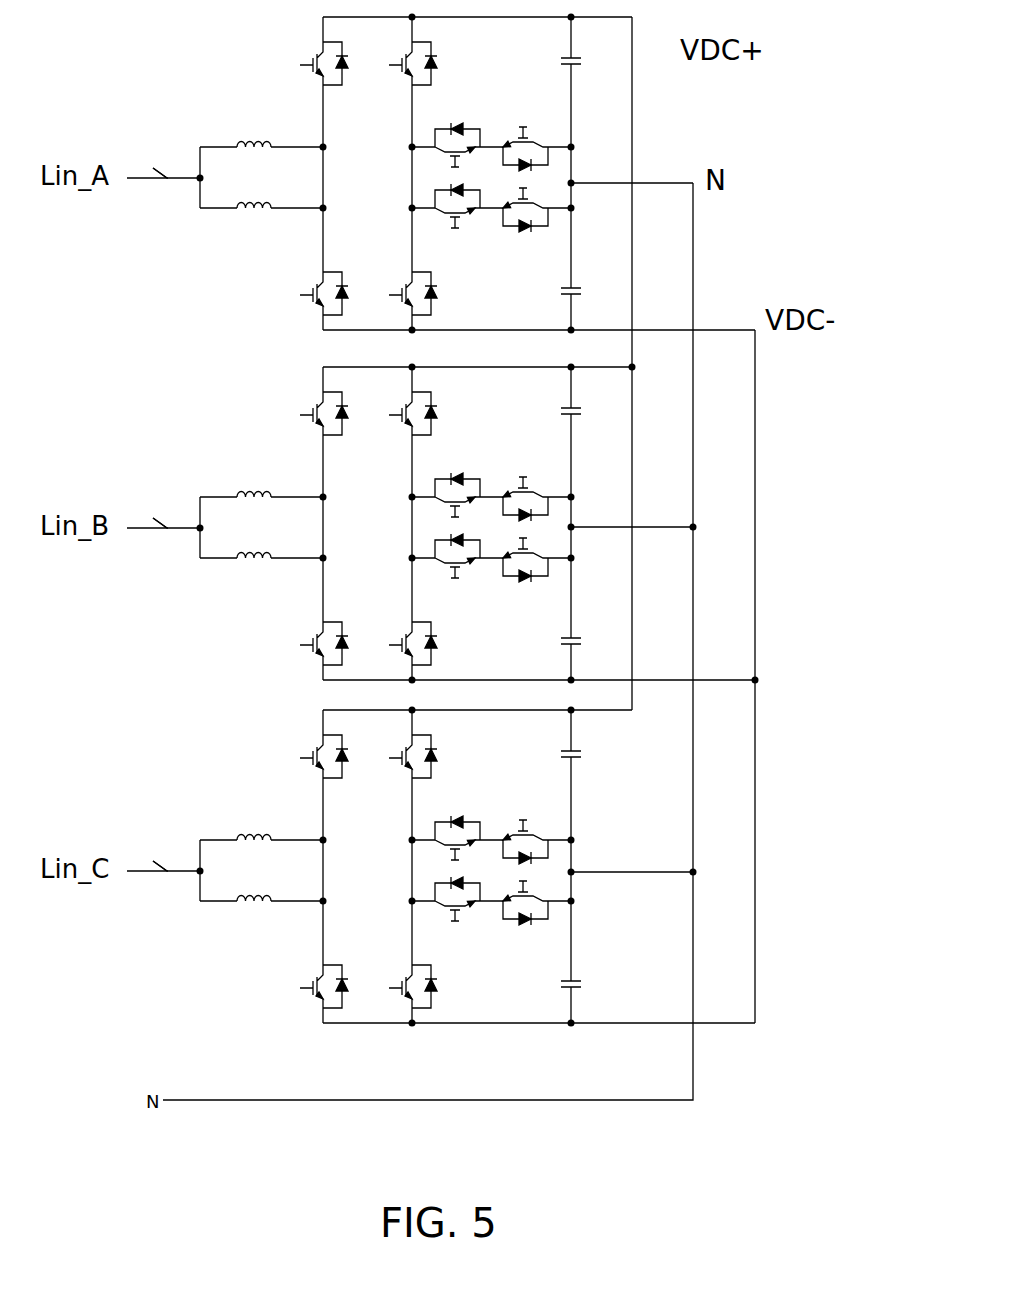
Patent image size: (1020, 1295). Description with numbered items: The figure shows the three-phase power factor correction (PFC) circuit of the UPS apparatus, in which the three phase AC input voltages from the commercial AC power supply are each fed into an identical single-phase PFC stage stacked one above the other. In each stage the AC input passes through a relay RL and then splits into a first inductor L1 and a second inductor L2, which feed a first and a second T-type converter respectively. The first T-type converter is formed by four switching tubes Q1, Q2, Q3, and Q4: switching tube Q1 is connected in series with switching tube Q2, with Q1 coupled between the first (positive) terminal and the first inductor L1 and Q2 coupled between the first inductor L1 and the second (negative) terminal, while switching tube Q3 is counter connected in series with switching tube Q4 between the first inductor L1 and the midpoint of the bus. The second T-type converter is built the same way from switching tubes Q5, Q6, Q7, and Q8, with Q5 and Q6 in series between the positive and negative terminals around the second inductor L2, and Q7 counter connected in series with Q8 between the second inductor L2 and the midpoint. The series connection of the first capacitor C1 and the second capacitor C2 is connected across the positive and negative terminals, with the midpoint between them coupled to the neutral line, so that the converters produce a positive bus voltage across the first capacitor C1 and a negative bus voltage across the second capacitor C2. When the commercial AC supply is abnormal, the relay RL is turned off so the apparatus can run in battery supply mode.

The switching tube Q1 is at (322, 406).
The switching tube Q2 is at (322, 637).
The switching tube Q3 is at (450, 491).
The switching tube Q4 is at (530, 495).
The switching tube Q5 is at (411, 406).
The switching tube Q6 is at (411, 637).
The switching tube Q7 is at (450, 552).
The switching tube Q8 is at (530, 556).
The first capacitor C1 is at (583, 408).
The second capacitor C2 is at (583, 638).
The first inductor L1 is at (254, 481).
The second inductor L2 is at (254, 567).
The relay RL is at (157, 534).